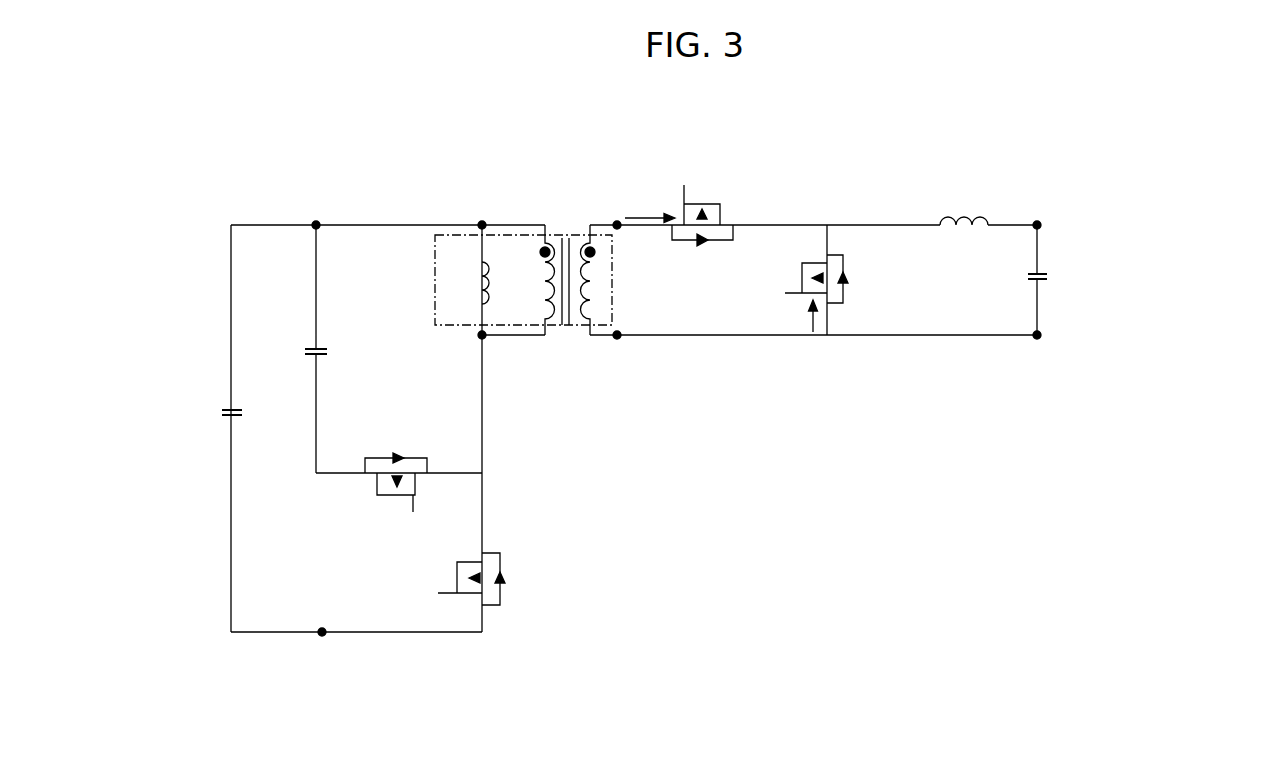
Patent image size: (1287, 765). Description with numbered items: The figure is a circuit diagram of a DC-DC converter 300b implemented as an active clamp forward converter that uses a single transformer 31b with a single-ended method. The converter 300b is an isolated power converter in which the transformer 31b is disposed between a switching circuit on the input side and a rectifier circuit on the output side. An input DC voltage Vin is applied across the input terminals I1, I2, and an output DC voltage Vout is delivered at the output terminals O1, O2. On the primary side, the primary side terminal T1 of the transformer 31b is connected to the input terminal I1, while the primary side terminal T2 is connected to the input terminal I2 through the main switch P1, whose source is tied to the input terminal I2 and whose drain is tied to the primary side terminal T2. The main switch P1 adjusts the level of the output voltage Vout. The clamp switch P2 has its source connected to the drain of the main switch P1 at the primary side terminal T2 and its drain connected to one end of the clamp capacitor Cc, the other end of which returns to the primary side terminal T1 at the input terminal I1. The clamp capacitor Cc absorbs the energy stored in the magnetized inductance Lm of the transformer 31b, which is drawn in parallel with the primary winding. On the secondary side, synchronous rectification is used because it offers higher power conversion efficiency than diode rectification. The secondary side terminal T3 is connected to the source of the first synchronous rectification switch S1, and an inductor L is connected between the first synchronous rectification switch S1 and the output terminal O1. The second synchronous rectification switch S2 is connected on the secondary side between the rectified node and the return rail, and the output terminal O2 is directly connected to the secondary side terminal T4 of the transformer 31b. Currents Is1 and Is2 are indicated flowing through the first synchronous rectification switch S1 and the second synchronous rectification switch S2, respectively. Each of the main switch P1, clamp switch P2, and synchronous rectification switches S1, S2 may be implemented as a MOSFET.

The DC-DC converter 300b is at (1237, 120).
The transformer 31b is at (565, 232).
The input DC voltage Vin is at (205, 412).
The output DC voltage Vout is at (1064, 273).
The input terminal I1 is at (313, 212).
The input terminal I2 is at (320, 646).
The primary side terminal T1 is at (478, 212).
The primary side terminal T2 is at (498, 346).
The secondary side terminal T3 is at (612, 212).
The secondary side terminal T4 is at (617, 346).
The output terminal O1 is at (1035, 210).
The output terminal O2 is at (1035, 349).
The clamp capacitor Cc is at (334, 352).
The magnetized inductance Lm is at (468, 283).
The inductor L is at (964, 205).
The first synchronous rectification switch S1 is at (702, 200).
The second synchronous rectification switch S2 is at (795, 279).
The main switch P1 is at (458, 579).
The clamp switch P2 is at (396, 492).
The first secondary current Is1 is at (650, 207).
The second secondary current Is2 is at (795, 316).